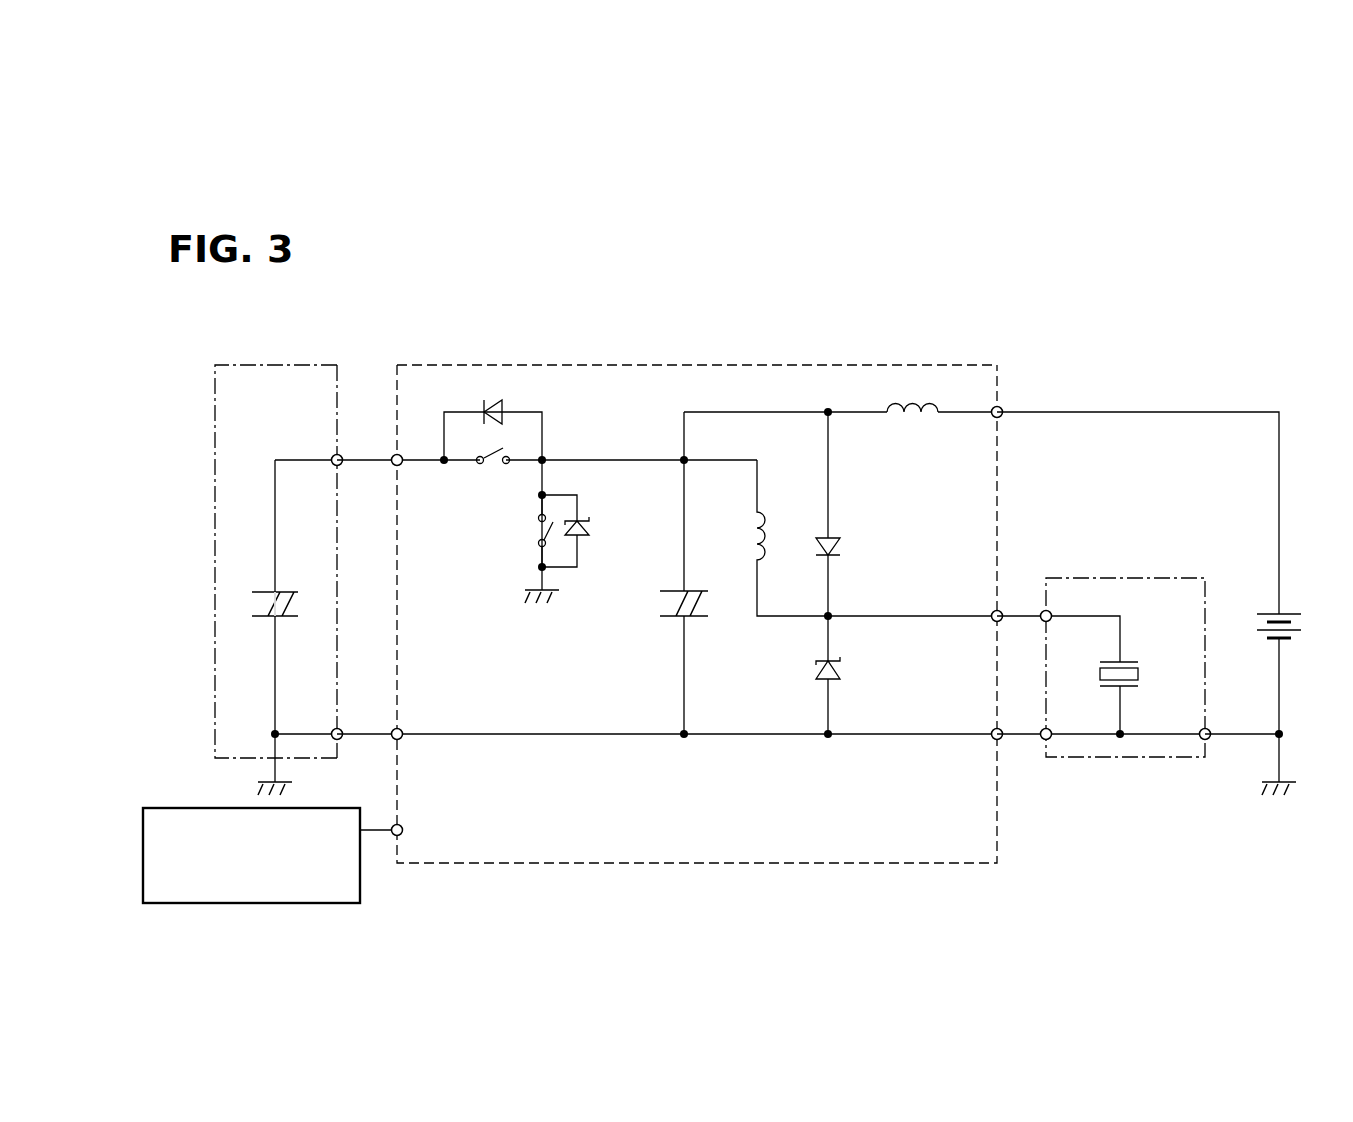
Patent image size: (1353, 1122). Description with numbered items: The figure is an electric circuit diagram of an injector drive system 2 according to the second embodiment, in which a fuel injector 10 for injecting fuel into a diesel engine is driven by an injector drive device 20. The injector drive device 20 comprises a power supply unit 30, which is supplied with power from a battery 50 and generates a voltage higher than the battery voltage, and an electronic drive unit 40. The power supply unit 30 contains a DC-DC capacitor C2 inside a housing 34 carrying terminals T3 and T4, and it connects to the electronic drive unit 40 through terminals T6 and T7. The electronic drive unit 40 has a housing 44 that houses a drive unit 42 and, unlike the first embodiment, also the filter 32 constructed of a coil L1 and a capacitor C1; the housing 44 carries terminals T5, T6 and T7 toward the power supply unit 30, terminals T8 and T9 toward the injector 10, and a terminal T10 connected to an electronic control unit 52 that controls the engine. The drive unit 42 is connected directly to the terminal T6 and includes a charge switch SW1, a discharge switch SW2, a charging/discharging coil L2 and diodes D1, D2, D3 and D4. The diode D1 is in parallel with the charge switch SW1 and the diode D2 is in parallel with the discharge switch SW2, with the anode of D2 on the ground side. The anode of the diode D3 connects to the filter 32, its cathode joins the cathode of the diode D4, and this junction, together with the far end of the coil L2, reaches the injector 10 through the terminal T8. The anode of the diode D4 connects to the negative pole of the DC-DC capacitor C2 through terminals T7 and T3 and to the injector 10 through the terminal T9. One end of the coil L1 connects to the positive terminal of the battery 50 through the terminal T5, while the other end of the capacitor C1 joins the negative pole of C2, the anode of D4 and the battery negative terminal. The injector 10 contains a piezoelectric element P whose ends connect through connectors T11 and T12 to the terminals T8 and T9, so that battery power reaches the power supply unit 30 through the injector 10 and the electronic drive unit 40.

The injector drive system 2 is at (1093, 340).
The fuel injector 10 is at (1133, 578).
The injector drive device 20 is at (475, 292).
The power supply unit 30 is at (298, 330).
The filter 32 is at (921, 378).
The housing 34 is at (336, 365).
The electronic drive unit 40 is at (599, 330).
The drive unit 42 is at (597, 425).
The housing 44 is at (768, 365).
The battery 50 is at (1291, 614).
The electronic control unit 52 is at (187, 905).
The terminal T3 is at (332, 727).
The terminal T4 is at (332, 452).
The terminal T5 is at (994, 406).
The terminal T6 is at (392, 452).
The terminal T7 is at (392, 727).
The terminal T8 is at (993, 608).
The terminal T9 is at (993, 726).
The terminal T10 is at (393, 823).
The connector T11 is at (1040, 608).
The connector T12 is at (1040, 726).
The capacitor C1 is at (675, 590).
The DC-DC capacitor C2 is at (268, 592).
The diode D1 is at (502, 410).
The diode D2 is at (590, 528).
The diode D3 is at (825, 536).
The diode D4 is at (821, 676).
The coil L1 is at (915, 416).
The charging/discharging coil L2 is at (757, 540).
The charge switch SW1 is at (498, 466).
The discharge switch SW2 is at (536, 532).
The piezoelectric element P is at (1140, 672).